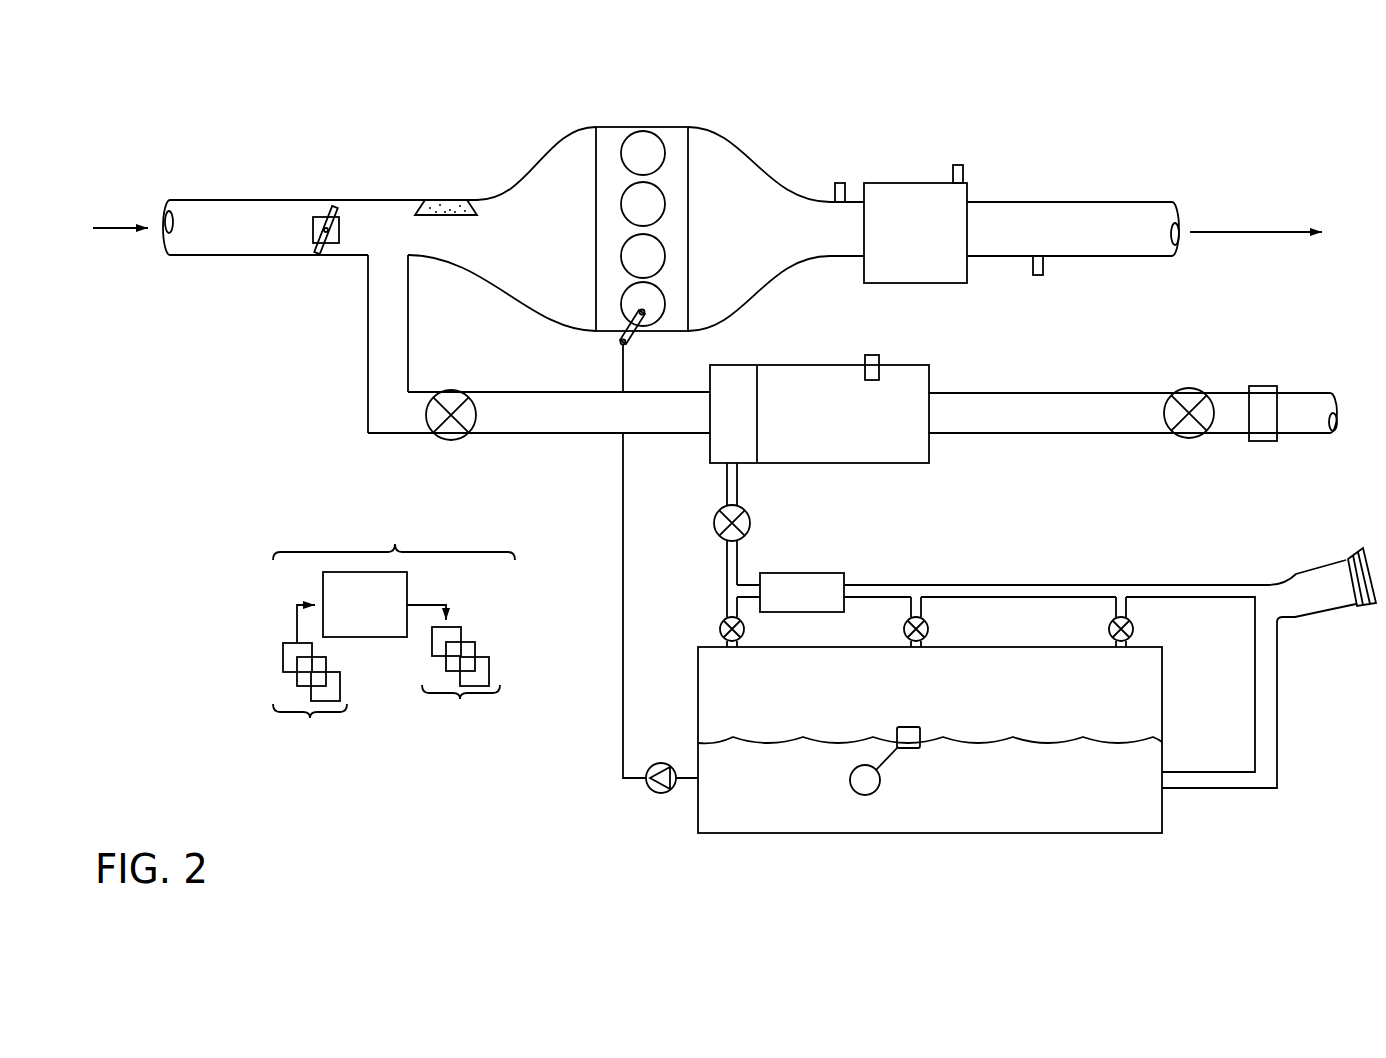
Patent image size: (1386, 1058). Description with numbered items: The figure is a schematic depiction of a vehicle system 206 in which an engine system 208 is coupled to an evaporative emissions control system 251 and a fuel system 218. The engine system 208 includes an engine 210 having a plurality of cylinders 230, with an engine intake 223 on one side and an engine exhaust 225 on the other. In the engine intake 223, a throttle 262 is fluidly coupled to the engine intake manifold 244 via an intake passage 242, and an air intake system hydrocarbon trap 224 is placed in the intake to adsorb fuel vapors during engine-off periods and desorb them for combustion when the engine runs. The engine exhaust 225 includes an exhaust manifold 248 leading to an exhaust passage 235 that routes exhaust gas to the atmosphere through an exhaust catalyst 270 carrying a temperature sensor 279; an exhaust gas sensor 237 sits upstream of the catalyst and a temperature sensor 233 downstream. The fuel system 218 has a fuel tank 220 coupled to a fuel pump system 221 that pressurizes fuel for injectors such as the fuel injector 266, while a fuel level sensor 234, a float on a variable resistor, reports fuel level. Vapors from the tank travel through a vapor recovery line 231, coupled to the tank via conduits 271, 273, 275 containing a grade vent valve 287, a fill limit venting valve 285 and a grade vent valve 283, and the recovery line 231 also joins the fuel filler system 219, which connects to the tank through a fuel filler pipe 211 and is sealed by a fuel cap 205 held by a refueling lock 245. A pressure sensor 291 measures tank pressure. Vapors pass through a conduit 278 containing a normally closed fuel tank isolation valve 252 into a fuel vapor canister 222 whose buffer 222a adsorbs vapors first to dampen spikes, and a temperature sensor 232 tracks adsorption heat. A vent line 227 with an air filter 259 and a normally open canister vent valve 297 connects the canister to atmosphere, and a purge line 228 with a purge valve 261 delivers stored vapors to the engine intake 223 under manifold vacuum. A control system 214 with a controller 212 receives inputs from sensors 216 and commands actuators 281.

The vehicle system 206 is at (222, 320).
The engine intake 223 is at (362, 185).
The air intake system hydrocarbon trap 224 is at (446, 200).
The throttle 262 is at (339, 234).
The intake passage 242 is at (367, 258).
The engine intake manifold 244 is at (559, 239).
The engine 210 is at (689, 213).
The cylinders 230 is at (663, 152).
The fuel injector 266 is at (631, 337).
The exhaust manifold 248 is at (773, 239).
The engine exhaust 225 is at (786, 168).
The exhaust gas sensor 237 is at (835, 196).
The exhaust catalyst 270 is at (900, 183).
The temperature sensor 279 is at (963, 170).
The engine system 208 is at (1022, 186).
The exhaust passage 235 is at (1128, 202).
The temperature sensor 233 is at (1033, 267).
The purge line 228 is at (569, 424).
The purge valve 261 is at (448, 392).
The fuel pump system 221 is at (659, 763).
The fuel vapor canister 222 is at (929, 385).
The buffer 222a is at (727, 365).
The temperature sensor 232 is at (871, 355).
The vent line 227 is at (1010, 423).
The canister vent valve 297 is at (1189, 388).
The air filter 259 is at (1267, 386).
The evaporative emissions control system 251 is at (1326, 343).
The fuel tank isolation valve 252 is at (727, 540).
The conduit 278 is at (729, 505).
The pressure sensor 291 is at (844, 583).
The grade vent valve 287 is at (719, 630).
The conduit 271 is at (742, 606).
The vapor recovery line 231 is at (1180, 583).
The conduit 273 is at (911, 603).
The fill limit venting valve 285 is at (928, 631).
The conduit 275 is at (1116, 603).
The grade vent valve 283 is at (1133, 631).
The fuel tank 220 is at (1162, 742).
The fuel level sensor 234 is at (908, 727).
The fuel filler pipe 211 is at (1278, 688).
The fuel filler system 219 is at (1328, 540).
The fuel cap 205 is at (1356, 548).
The refueling lock 245 is at (1358, 607).
The fuel system 218 is at (1302, 762).
The control system 214 is at (394, 531).
The controller 212 is at (365, 604).
The sensors 216 is at (310, 680).
The actuators 281 is at (453, 672).